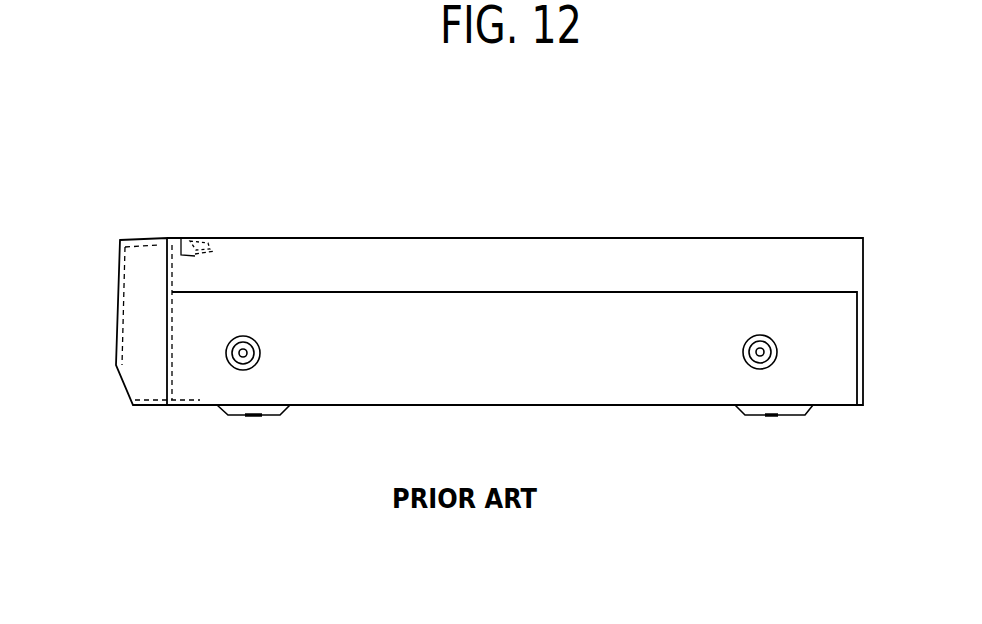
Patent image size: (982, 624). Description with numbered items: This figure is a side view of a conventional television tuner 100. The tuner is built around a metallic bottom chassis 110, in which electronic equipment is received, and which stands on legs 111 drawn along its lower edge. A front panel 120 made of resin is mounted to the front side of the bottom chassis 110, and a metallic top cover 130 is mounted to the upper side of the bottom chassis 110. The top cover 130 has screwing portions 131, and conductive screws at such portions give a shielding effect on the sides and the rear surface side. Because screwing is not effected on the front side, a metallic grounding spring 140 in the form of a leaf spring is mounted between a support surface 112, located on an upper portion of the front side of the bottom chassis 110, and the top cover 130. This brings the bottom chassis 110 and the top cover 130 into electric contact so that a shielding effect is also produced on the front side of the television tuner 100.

The television tuner 100 is at (562, 205).
The bottom chassis 110 is at (537, 293).
The legs 111 is at (258, 416).
The support surface 112 is at (192, 238).
The front panel 120 is at (137, 333).
The top cover 130 is at (665, 236).
The screwing portions 131 is at (246, 353).
The grounding spring 140 is at (202, 240).